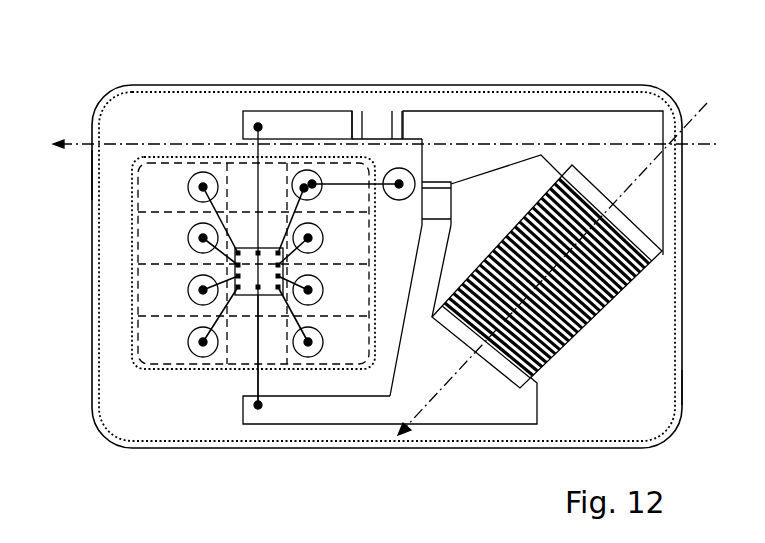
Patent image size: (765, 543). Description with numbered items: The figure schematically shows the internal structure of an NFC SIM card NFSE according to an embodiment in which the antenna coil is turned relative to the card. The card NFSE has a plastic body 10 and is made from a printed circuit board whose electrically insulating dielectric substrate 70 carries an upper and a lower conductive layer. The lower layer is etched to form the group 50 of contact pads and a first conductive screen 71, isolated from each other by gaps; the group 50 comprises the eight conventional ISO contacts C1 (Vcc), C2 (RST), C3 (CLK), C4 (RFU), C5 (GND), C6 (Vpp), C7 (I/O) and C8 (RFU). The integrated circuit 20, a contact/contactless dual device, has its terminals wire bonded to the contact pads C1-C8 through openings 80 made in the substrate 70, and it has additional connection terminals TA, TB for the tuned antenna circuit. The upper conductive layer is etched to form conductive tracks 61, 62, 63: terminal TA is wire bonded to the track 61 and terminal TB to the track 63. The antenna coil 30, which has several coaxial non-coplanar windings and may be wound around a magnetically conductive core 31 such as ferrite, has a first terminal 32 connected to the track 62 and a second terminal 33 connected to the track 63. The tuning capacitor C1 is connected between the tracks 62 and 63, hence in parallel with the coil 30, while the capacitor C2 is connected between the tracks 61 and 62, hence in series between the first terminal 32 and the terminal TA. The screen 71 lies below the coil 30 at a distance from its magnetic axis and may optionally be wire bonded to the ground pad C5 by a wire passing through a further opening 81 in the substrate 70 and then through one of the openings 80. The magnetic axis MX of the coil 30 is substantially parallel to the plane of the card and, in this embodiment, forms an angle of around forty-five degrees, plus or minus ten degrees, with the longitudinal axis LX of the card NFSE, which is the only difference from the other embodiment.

The plastic body 10 is at (160, 85).
The dielectric substrate 70 is at (134, 123).
The openings 80 is at (150, 157).
The group of contact pads 50 is at (133, 265).
The integrated circuit 20 is at (259, 271).
The conductive track 61 is at (310, 120).
The conductive track 62 is at (490, 115).
The conductive track 63 is at (362, 403).
The first conductive screen 71 is at (264, 92).
The further opening 81 is at (388, 172).
The antenna coil 30 is at (652, 283).
The magnetically conductive core 31 is at (645, 254).
The first terminal of the antenna coil 32 is at (643, 233).
The second terminal of the antenna coil 33 is at (657, 402).
The contact pad C1 (Vcc) / tuning capacitor C1 is at (183, 198).
The contact pad C2 (RST) / tuning capacitor C2 is at (183, 249).
The contact pad C3 (CLK) C3 is at (183, 301).
The contact pad C4 (RFU) C4 is at (183, 353).
The contact pad C5 (GND) C5 is at (288, 198).
The contact pad C6 (Vpp) C6 is at (355, 249).
The contact pad C7 (I/O) C7 is at (355, 301).
The contact pad C8 (RFU) C8 is at (355, 353).
The connection terminal TA is at (257, 250).
The connection terminal TB is at (258, 296).
The magnetic axis MX is at (707, 103).
The longitudinal axis LX is at (718, 144).
The NFC SIM card NFSE is at (106, 71).